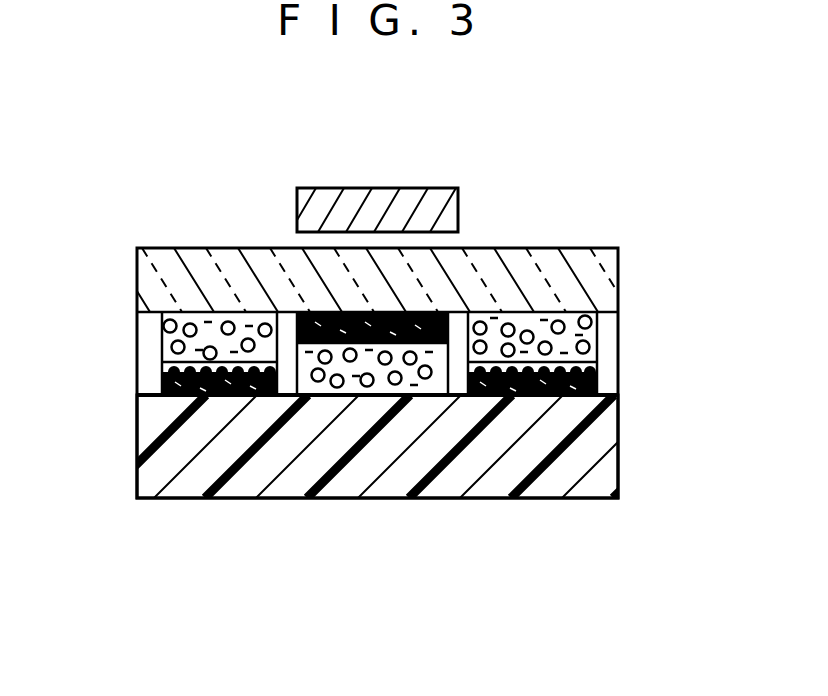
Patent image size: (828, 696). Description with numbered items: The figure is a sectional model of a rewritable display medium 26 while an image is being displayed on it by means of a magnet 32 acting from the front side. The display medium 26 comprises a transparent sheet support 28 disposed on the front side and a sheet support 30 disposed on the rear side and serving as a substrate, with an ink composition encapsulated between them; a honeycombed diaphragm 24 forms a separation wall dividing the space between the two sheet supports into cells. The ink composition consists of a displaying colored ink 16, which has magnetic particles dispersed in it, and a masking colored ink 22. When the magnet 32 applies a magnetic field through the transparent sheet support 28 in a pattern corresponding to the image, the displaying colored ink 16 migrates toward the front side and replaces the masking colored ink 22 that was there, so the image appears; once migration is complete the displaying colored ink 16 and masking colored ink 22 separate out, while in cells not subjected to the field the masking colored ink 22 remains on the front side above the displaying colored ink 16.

The displaying colored ink 16 is at (317, 313).
The masking colored ink 22 is at (597, 337).
The honeycombed diaphragm 24 is at (137, 340).
The rewritable display medium 26 is at (607, 138).
The transparent sheet support 28 is at (500, 278).
The sheet support 30 is at (527, 442).
The magnet 32 is at (380, 190).